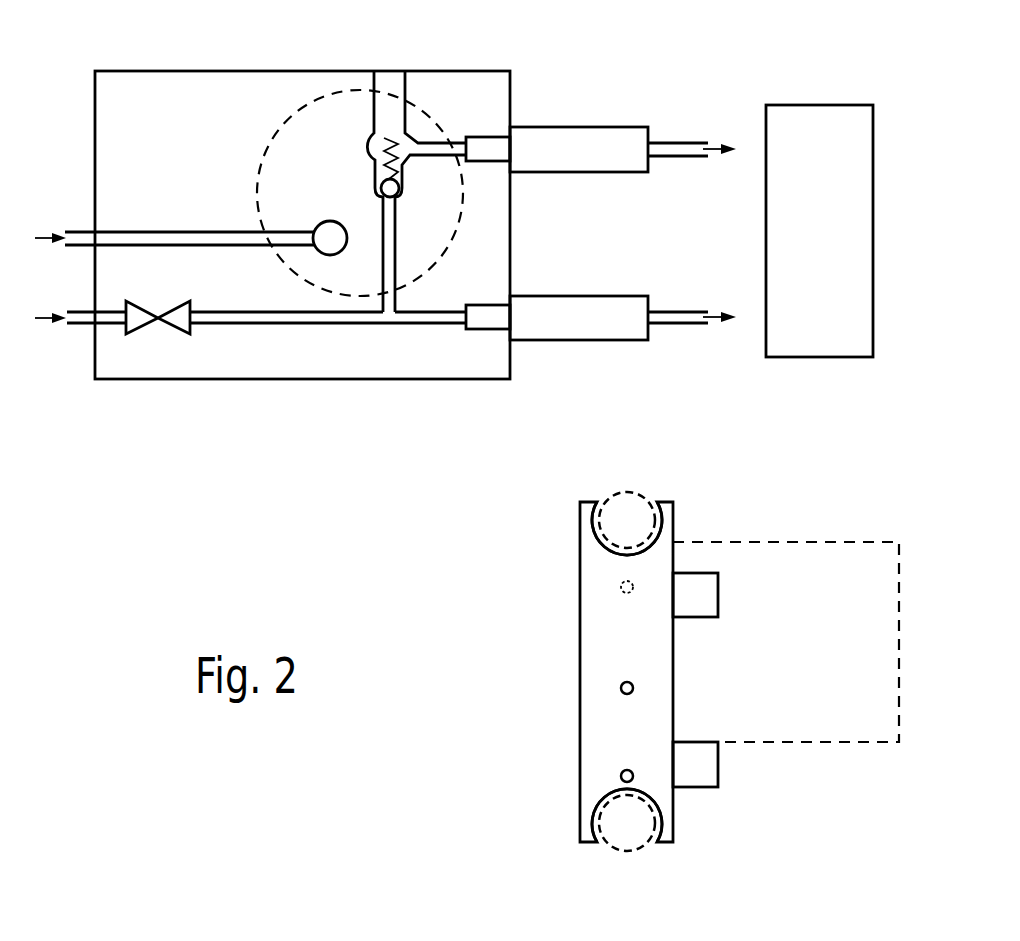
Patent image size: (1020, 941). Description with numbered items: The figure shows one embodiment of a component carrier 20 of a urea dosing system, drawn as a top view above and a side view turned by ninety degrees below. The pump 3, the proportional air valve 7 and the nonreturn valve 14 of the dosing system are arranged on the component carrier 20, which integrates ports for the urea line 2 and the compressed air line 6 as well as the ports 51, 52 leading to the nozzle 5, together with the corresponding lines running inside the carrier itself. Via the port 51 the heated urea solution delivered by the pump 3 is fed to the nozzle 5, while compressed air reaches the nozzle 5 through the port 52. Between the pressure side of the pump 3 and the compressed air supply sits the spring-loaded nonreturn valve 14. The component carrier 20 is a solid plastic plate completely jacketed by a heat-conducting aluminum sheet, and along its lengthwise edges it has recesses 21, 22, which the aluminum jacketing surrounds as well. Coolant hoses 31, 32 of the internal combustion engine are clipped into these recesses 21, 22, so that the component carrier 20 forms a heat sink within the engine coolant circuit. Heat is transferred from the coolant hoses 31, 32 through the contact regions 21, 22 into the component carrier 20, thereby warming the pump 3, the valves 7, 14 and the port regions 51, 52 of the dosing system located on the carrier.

The urea line 2 is at (70, 232).
The pump 3 is at (334, 91).
The nozzle 5 is at (820, 105).
The compressed air line 6 is at (72, 325).
The proportional air valve 7 is at (145, 320).
The nonreturn valve 14 is at (400, 180).
The component carrier 20 is at (153, 71).
The recess 21 is at (593, 520).
The recess 22 is at (594, 820).
The coolant hose 31 is at (633, 492).
The coolant hose 32 is at (628, 852).
The port 51 is at (627, 127).
The port 52 is at (627, 296).